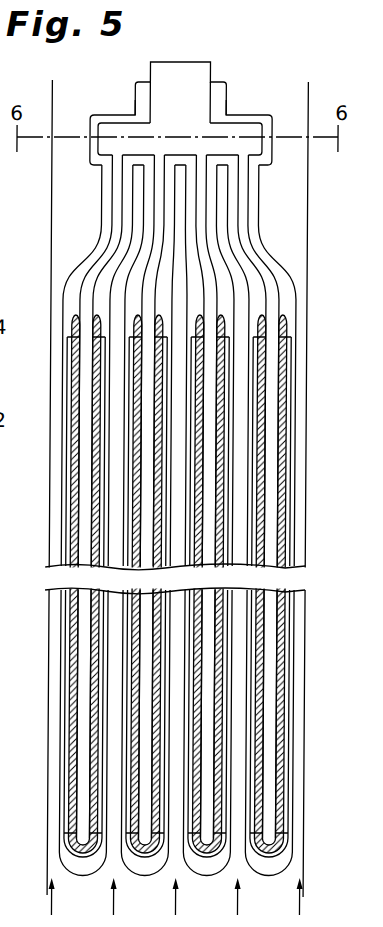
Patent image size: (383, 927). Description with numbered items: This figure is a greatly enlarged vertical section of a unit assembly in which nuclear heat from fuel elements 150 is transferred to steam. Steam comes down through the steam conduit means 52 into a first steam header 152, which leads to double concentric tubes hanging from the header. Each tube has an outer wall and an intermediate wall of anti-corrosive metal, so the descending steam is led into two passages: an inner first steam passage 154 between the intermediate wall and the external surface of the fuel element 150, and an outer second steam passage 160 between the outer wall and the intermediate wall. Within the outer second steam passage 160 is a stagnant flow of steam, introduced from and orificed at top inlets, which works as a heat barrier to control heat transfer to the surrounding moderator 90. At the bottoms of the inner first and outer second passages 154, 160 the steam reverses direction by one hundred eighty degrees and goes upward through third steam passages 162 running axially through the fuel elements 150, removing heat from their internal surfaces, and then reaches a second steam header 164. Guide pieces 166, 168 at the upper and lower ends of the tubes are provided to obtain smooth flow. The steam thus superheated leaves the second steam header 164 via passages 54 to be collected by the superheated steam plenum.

The steam conduit means 52 is at (135, 100).
The passages 54 is at (215, 72).
The moderator 90 is at (181, 515).
The fuel element 150 is at (283, 435).
The first steam header 152 is at (266, 166).
The inner first steam passage 154 is at (288, 518).
The outer second steam passage 160 is at (298, 343).
The third steam passage 162 is at (268, 555).
The second steam header 164 is at (263, 143).
The guide piece 166 is at (292, 322).
The guide piece 168 is at (282, 842).